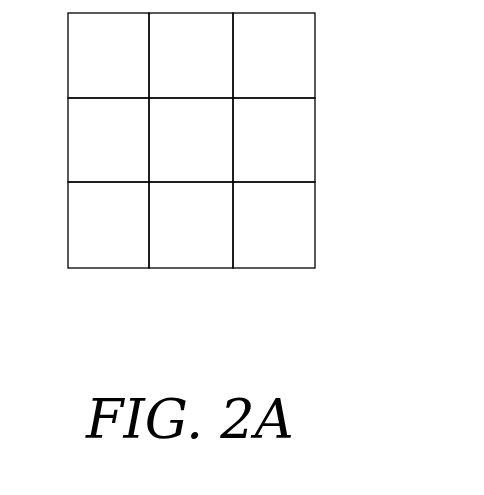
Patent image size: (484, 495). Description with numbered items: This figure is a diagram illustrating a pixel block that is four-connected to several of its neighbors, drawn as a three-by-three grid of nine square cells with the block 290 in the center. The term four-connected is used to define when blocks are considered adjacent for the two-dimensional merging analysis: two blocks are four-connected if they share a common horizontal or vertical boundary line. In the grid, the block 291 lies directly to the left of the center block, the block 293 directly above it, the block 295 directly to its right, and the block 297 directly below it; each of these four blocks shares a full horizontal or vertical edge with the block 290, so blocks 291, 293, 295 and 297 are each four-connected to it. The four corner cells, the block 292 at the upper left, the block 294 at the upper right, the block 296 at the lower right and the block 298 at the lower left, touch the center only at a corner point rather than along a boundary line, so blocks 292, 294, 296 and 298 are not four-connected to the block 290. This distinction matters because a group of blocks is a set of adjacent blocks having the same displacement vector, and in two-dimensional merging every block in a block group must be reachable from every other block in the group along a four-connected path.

The block 290 is at (191, 140).
The block 291 is at (108, 140).
The block 292 is at (108, 55).
The block 293 is at (191, 55).
The block 294 is at (274, 55).
The block 295 is at (274, 140).
The block 296 is at (274, 225).
The block 297 is at (191, 225).
The block 298 is at (108, 225).